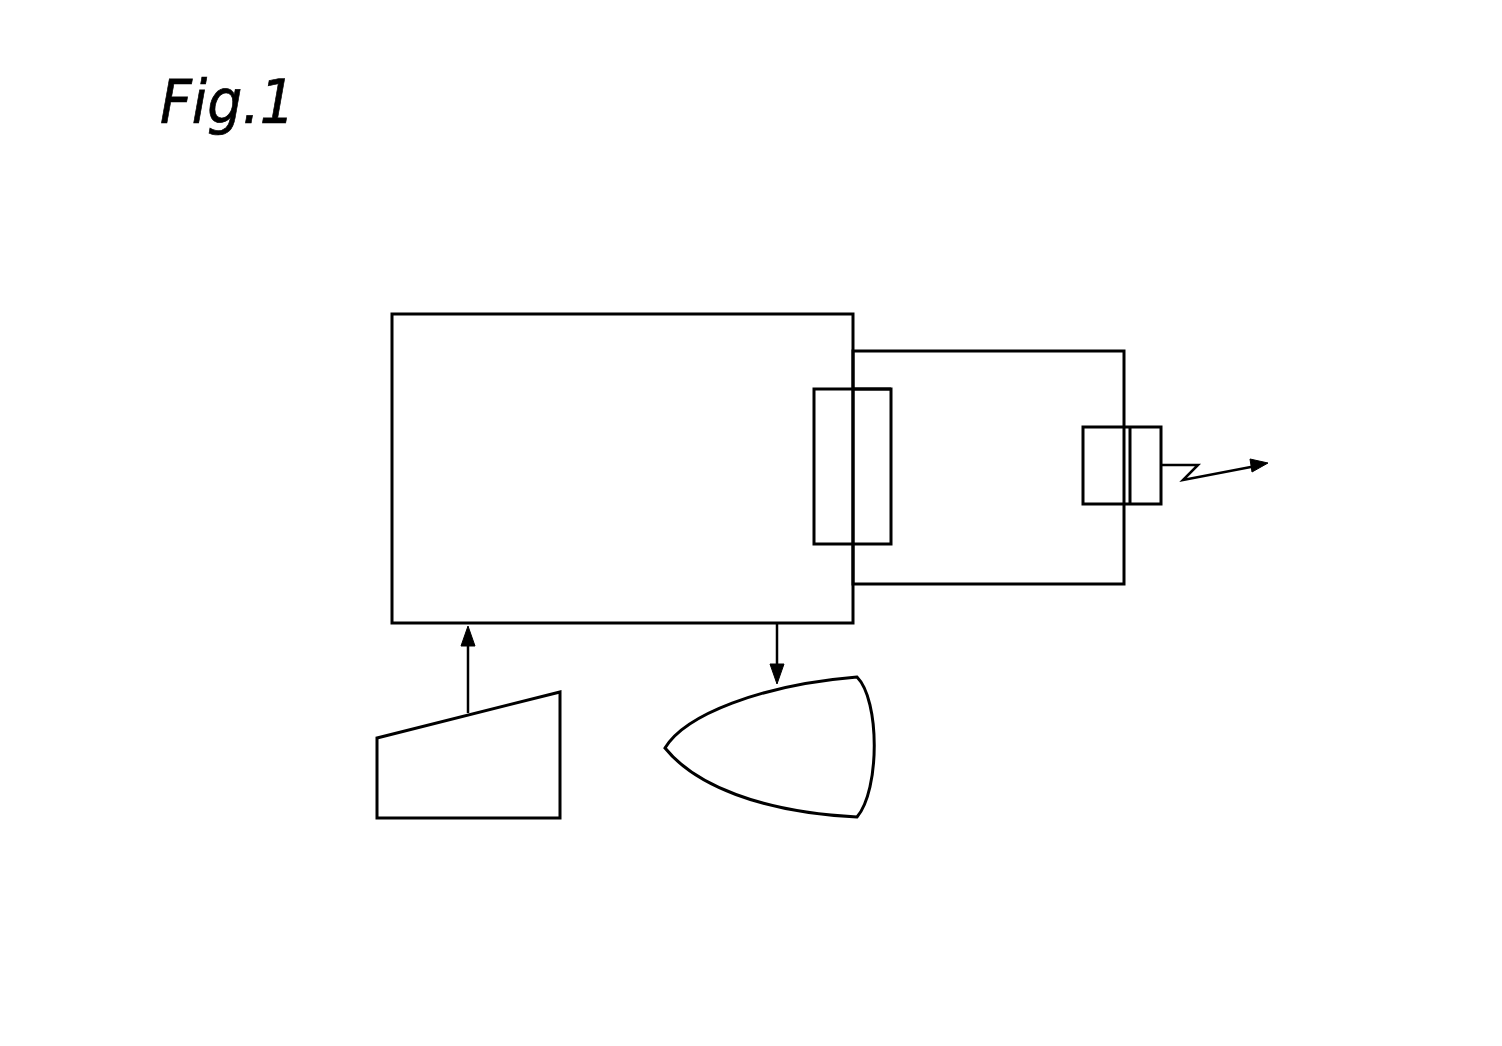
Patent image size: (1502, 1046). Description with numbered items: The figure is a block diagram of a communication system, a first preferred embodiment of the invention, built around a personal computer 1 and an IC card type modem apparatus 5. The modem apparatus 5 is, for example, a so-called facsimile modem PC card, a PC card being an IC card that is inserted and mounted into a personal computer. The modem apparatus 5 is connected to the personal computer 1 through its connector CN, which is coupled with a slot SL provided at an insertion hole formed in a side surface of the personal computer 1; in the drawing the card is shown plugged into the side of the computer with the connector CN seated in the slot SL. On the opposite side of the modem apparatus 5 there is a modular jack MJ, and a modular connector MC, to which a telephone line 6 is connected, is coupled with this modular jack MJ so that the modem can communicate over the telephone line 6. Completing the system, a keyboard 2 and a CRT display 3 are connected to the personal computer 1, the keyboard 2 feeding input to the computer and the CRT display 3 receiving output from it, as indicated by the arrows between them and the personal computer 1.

The personal computer 1 is at (470, 313).
The keyboard 2 is at (468, 818).
The CRT display 3 is at (777, 817).
The IC card type modem apparatus 5 is at (1010, 351).
The telephone line 6 is at (1220, 473).
The slot SL is at (829, 389).
The connector CN is at (876, 389).
The modular jack MJ is at (1103, 427).
The modular connector MC is at (1144, 427).